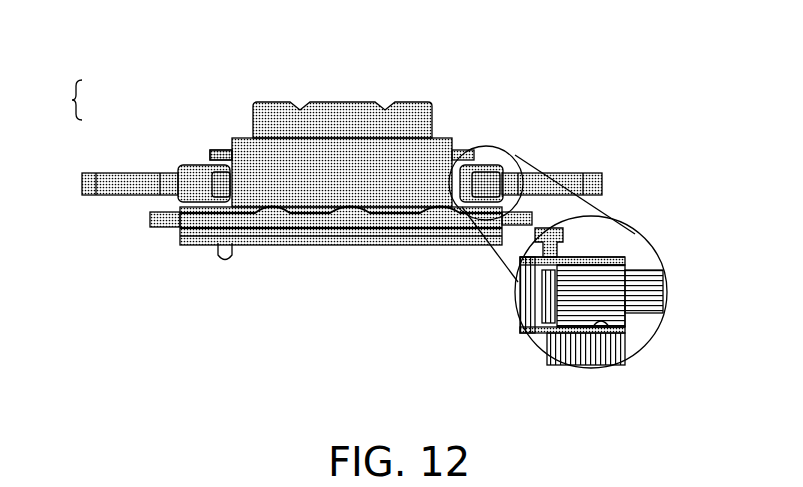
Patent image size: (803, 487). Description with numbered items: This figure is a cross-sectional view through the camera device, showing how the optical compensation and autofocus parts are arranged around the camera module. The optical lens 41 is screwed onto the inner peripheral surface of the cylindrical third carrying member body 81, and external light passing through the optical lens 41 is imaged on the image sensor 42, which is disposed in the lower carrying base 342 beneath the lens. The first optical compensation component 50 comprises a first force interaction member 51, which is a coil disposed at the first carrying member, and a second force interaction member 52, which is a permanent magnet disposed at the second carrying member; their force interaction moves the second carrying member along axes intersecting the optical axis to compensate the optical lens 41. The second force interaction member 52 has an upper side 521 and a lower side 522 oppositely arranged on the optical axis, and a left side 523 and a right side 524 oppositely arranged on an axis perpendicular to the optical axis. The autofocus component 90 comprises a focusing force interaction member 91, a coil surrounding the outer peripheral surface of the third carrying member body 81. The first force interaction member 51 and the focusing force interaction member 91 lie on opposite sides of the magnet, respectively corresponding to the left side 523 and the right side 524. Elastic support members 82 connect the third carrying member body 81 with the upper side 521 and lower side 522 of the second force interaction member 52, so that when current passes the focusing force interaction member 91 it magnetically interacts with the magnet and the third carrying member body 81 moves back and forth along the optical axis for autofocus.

The optical lens 41 is at (412, 122).
The image sensor 42 is at (354, 222).
The lower carrying base 342 is at (468, 226).
The first optical compensation component 50 is at (65, 100).
The first force interaction member 51 is at (168, 175).
The second force interaction member 52 is at (201, 170).
The upper side 521 is at (626, 266).
The lower side 522 is at (626, 331).
The left side 523 is at (626, 310).
The right side 524 is at (553, 257).
The third carrying member body 81 is at (214, 190).
The elastic support member 82 is at (230, 168).
The autofocus component 90 is at (137, 36).
The focusing force interaction member 91 is at (227, 170).